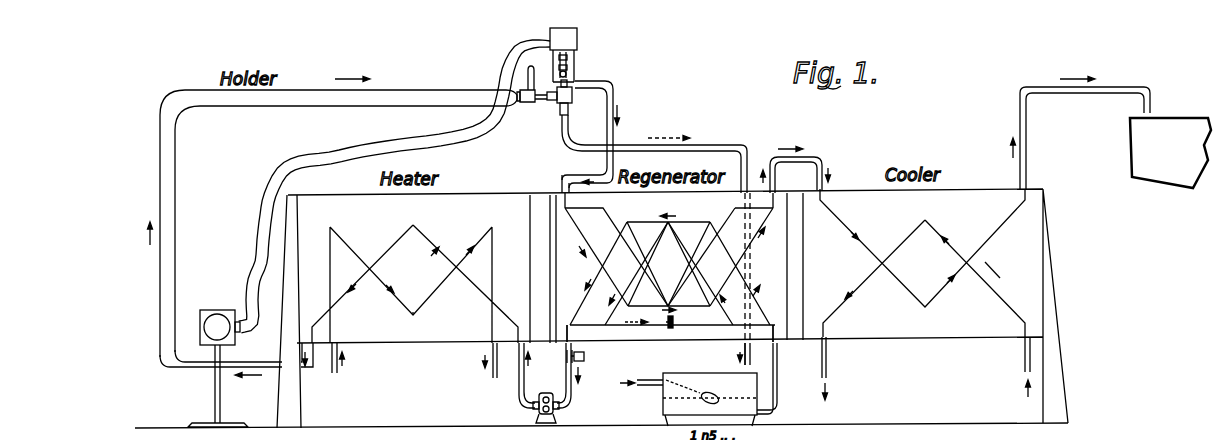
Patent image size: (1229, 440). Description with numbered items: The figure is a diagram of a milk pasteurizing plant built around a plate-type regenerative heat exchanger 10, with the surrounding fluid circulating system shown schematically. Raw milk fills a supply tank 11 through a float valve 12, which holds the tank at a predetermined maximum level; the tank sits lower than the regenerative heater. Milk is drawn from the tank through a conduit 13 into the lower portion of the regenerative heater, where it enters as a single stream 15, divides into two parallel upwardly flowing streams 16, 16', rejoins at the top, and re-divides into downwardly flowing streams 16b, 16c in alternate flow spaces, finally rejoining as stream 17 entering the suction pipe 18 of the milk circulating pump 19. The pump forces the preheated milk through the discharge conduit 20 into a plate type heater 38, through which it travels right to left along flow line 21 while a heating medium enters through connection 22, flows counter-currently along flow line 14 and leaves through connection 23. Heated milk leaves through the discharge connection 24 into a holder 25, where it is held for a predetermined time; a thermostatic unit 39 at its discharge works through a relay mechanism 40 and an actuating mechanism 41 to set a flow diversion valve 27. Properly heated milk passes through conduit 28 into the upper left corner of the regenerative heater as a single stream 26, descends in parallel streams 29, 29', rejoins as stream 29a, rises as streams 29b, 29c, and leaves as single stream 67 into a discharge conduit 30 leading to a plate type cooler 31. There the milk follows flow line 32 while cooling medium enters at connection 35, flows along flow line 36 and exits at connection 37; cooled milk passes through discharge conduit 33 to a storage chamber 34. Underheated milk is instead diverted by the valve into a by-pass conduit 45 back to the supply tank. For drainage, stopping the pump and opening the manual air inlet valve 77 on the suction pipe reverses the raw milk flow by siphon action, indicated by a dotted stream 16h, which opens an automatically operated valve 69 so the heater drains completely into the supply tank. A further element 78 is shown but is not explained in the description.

The regenerative heat exchanger 10 is at (603, 192).
The raw milk supply tank 11 is at (661, 404).
The float valve 12 is at (665, 377).
The conduit 13 is at (778, 395).
The flow line 14 is at (427, 301).
The single stream 15 is at (778, 340).
The upwardly flowing stream 16 is at (686, 270).
The upwardly flowing stream 16' is at (701, 257).
The downwardly flowing stream 16b is at (657, 253).
The downwardly flowing stream 16c is at (584, 301).
The reverse flow stream 16h is at (722, 333).
The stream 17 is at (572, 325).
The suction pipe 18 is at (572, 396).
The milk circulating pump 19 is at (546, 393).
The discharge conduit 20 is at (518, 390).
The flow line 21 is at (397, 239).
The connection 22 is at (338, 372).
The connection 23 is at (489, 350).
The discharge connection 24 is at (188, 370).
The holder 25 is at (157, 163).
The single stream 26 is at (560, 193).
The flow diversion valve 27 is at (575, 100).
The conduit 28 is at (615, 94).
The downward flow stream 29 is at (596, 257).
The downward flow stream 29' is at (616, 253).
The single stream 29a is at (650, 316).
The upward flow stream 29b is at (748, 257).
The upward flow stream 29c is at (752, 256).
The discharge conduit 30 is at (812, 157).
The plate type cooler 31 is at (973, 187).
The flow line 32 is at (843, 218).
The discharge conduit 33 is at (1027, 112).
The storage chamber 34 is at (1160, 176).
The connection 35 is at (1031, 350).
The flow line 36 is at (988, 288).
The connection 37 is at (827, 366).
The plate type heater 38 is at (485, 193).
The thermostatic unit 39 is at (531, 104).
The relay mechanism 40 is at (206, 310).
The actuating mechanism 41 is at (570, 40).
The by-pass conduit 45 is at (704, 146).
The single stream 67 is at (776, 207).
The automatically operated valve 69 is at (678, 321).
The manual air inlet valve 77 is at (585, 357).
The control valve 78 is at (577, 58).